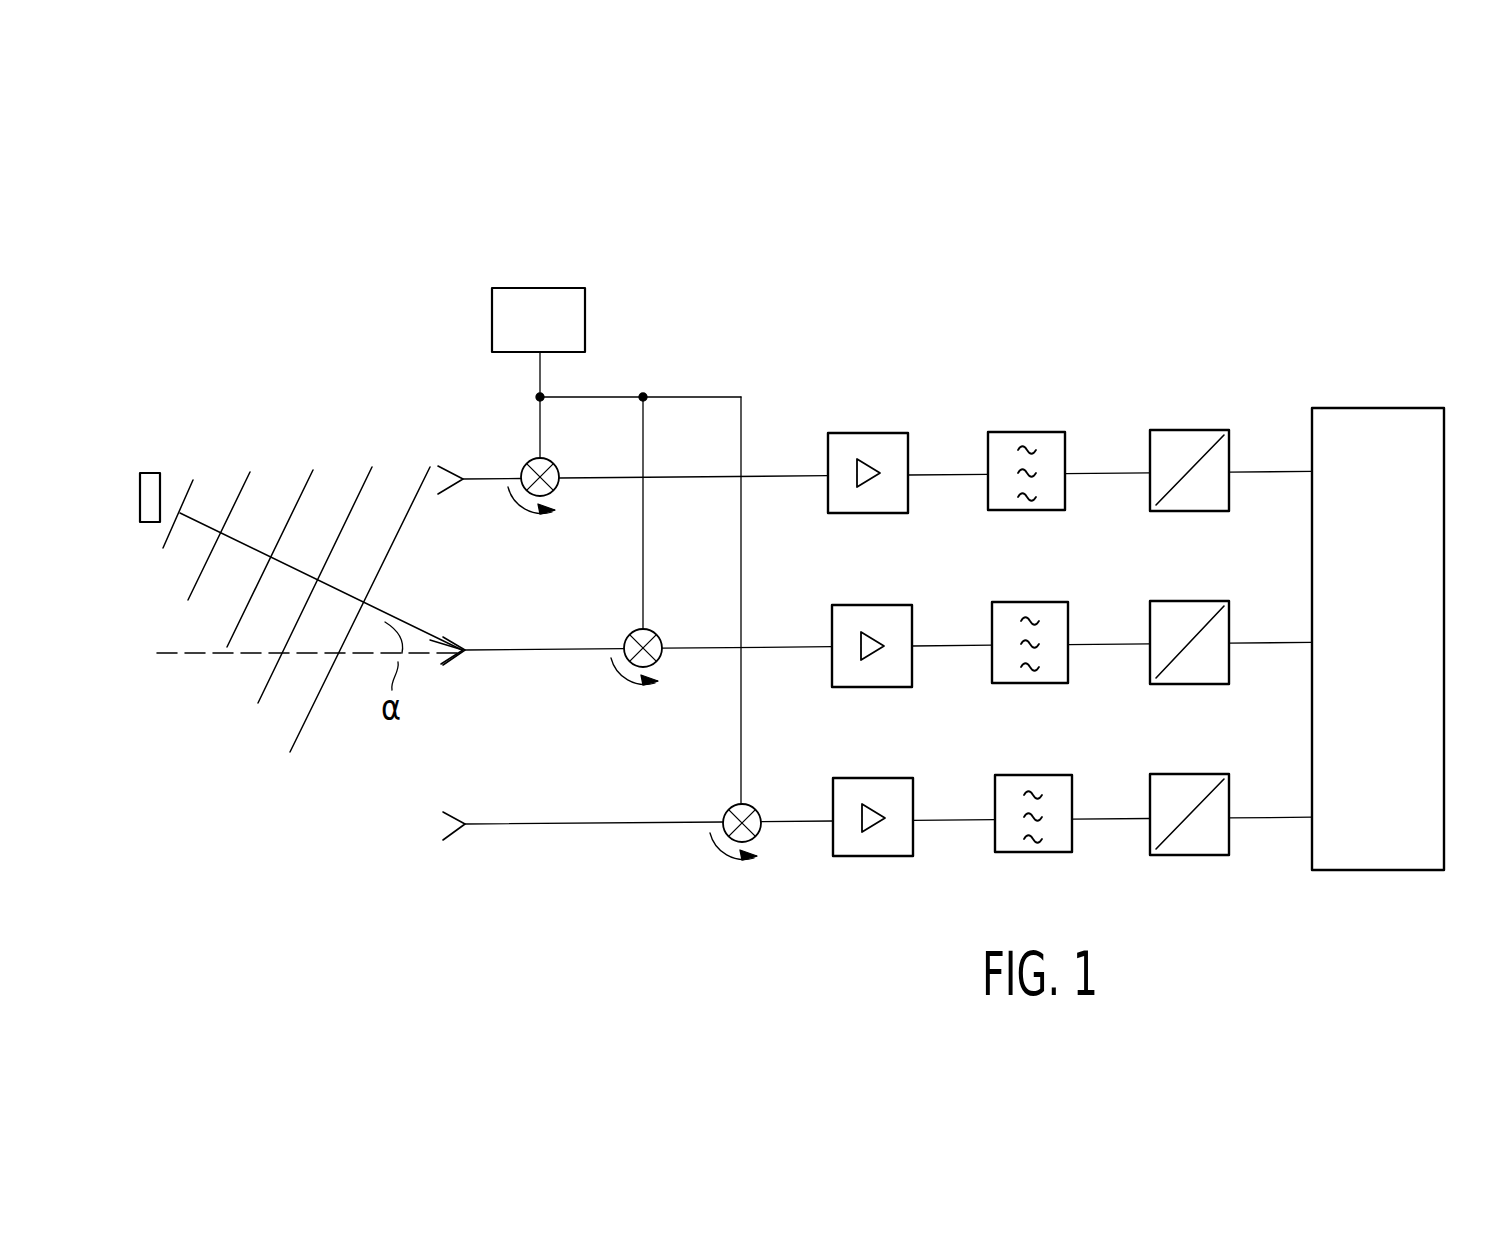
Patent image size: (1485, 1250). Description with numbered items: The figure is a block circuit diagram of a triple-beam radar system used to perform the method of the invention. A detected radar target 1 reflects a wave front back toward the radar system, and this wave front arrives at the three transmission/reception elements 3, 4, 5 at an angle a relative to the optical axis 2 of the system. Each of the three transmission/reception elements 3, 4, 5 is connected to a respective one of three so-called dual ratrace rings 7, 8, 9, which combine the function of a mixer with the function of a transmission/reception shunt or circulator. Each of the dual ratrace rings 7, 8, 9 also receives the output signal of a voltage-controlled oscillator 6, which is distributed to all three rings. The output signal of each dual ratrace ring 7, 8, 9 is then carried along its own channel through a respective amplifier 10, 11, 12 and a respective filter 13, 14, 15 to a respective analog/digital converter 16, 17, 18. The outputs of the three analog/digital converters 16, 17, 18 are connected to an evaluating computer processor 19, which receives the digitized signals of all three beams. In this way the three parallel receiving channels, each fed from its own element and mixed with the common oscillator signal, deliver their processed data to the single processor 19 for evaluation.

The detected radar target 1 is at (148, 470).
The optical axis 2 is at (165, 655).
The transmission/reception element 3 is at (462, 472).
The transmission/reception element 4 is at (462, 637).
The transmission/reception element 5 is at (457, 807).
The voltage-controlled oscillator 6 is at (537, 287).
The dual ratrace ring 7 is at (553, 459).
The dual ratrace ring 8 is at (655, 628).
The dual ratrace ring 9 is at (752, 808).
The amplifier 10 is at (862, 432).
The amplifier 11 is at (868, 605).
The amplifier 12 is at (872, 778).
The filter 13 is at (1022, 431).
The filter 14 is at (1030, 602).
The filter 15 is at (1035, 775).
The analog/digital converter 16 is at (1185, 429).
The analog/digital converter 17 is at (1190, 601).
The analog/digital converter 18 is at (1197, 774).
The evaluating computer processor 19 is at (1368, 407).